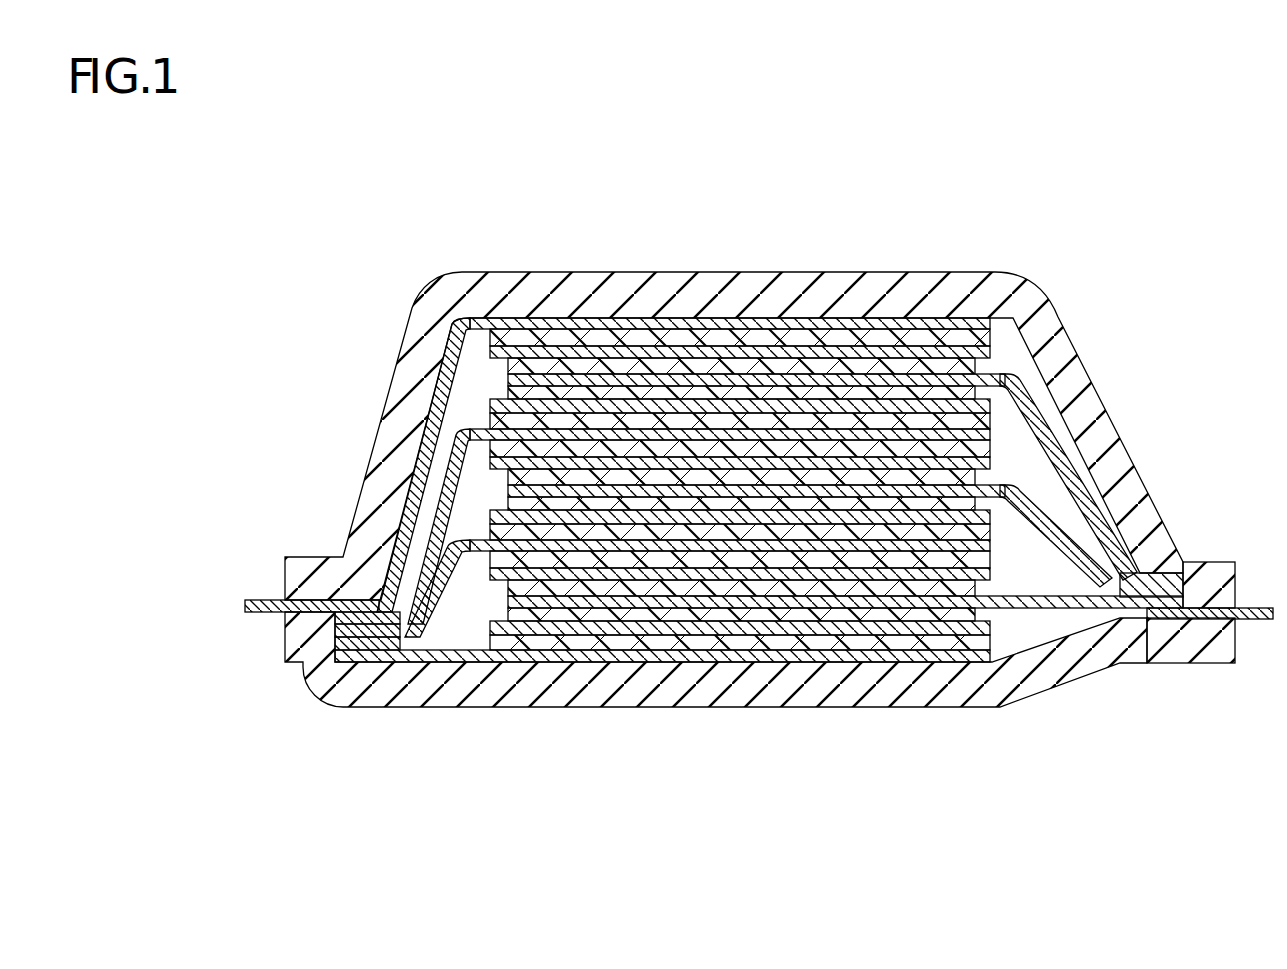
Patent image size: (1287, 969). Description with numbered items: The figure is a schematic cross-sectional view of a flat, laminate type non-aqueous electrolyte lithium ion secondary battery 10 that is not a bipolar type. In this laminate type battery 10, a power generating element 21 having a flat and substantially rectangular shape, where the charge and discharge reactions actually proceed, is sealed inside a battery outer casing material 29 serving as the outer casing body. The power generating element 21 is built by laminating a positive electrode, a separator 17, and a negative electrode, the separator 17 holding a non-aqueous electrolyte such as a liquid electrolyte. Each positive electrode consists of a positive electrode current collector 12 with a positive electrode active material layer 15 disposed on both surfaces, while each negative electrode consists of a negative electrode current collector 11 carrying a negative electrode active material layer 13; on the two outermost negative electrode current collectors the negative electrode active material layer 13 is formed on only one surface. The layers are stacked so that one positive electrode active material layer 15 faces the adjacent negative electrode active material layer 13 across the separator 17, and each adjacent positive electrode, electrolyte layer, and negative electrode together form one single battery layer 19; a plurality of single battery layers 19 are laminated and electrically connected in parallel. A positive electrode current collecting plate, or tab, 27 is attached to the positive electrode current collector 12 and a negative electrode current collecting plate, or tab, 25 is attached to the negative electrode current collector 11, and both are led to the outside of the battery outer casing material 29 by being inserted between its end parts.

The laminate type battery 10 is at (302, 147).
The negative electrode current collector 11 is at (840, 323).
The positive electrode current collector 12 is at (657, 383).
The negative electrode active material layer 13 is at (793, 333).
The positive electrode active material layer 15 is at (700, 363).
The separator 17 is at (745, 353).
The single battery layer 19 is at (630, 197).
The power generating element 21 is at (1000, 549).
The negative electrode current collecting plate (tab) 25 is at (262, 600).
The positive electrode current collecting plate (tab) 27 is at (1258, 607).
The battery outer casing material 29 is at (1215, 562).